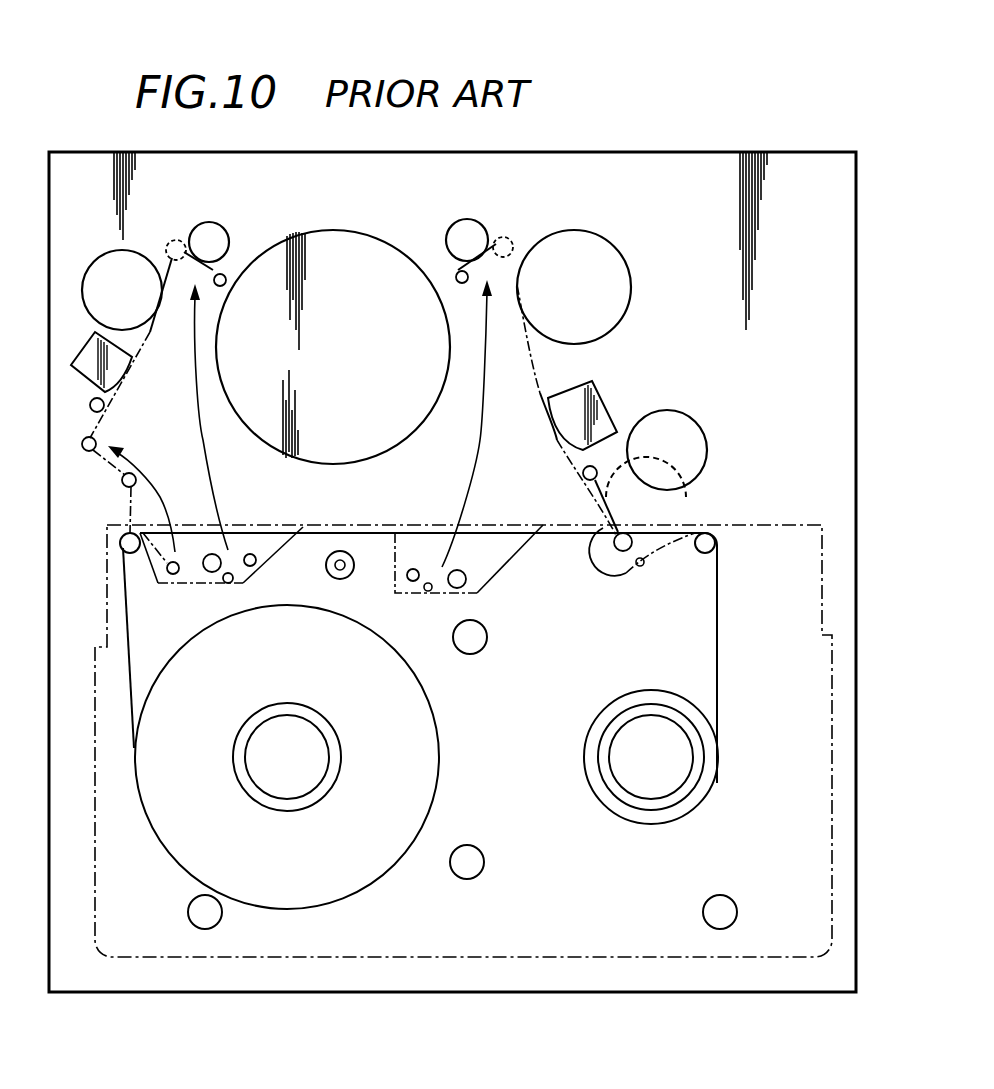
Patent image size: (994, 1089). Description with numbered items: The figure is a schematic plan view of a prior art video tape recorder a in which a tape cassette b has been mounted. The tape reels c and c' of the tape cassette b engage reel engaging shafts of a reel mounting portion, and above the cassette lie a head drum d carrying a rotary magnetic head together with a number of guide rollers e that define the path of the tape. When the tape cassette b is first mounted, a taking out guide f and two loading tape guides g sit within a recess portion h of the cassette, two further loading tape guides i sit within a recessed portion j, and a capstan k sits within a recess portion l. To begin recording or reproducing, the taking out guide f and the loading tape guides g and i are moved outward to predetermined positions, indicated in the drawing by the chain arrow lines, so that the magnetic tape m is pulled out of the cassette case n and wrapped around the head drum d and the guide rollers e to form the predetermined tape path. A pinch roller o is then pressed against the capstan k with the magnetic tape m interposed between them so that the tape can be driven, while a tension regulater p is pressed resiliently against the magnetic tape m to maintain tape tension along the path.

The video tape recorder a is at (750, 125).
The tape cassette b is at (507, 957).
The tape reel c is at (287, 757).
The tape reel c' is at (651, 738).
The head drum d is at (362, 232).
The guide roller e is at (125, 252).
The taking out guide f is at (92, 438).
The loading tape guide g is at (178, 262).
The recess portion h is at (229, 583).
The loading tape guide i is at (510, 256).
The recessed portion j is at (428, 591).
The capstan k is at (608, 560).
The recess portion l is at (641, 566).
The magnetic tape m is at (540, 393).
The cassette case n is at (797, 522).
The pinch roller o is at (697, 432).
The tension regulater p is at (123, 485).